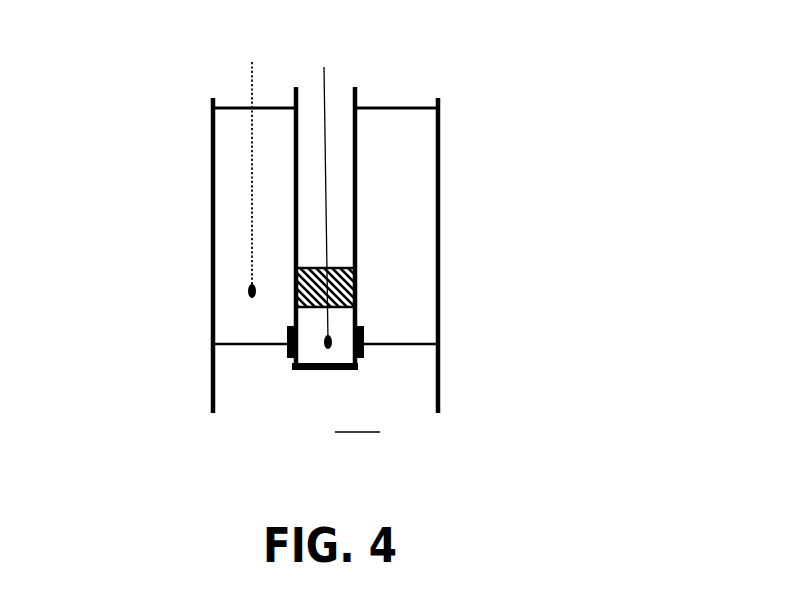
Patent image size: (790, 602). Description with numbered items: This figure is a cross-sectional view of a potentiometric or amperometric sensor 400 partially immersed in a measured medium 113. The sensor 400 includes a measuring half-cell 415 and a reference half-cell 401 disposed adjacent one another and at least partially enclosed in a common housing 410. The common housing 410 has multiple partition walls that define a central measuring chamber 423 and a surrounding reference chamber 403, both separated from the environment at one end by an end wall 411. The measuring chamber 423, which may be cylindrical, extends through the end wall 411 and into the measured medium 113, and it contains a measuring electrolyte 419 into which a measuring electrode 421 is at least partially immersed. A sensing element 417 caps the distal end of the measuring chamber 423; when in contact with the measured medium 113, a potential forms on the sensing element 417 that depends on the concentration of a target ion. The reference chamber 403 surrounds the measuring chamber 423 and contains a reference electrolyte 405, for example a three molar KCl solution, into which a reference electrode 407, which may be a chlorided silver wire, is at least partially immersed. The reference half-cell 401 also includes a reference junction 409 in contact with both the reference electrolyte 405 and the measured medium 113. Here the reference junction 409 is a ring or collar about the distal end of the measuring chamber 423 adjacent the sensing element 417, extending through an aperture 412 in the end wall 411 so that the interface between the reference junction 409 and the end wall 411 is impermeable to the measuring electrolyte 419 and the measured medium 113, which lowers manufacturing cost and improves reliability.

The sensor 400 is at (605, 111).
The reference half-cell 401 is at (206, 165).
The reference chamber 403 is at (413, 152).
The reference electrolyte 405 is at (232, 225).
The reference electrode 407 is at (252, 88).
The reference junction 409 is at (363, 338).
The common housing 410 is at (212, 280).
The end wall 411 is at (232, 345).
The aperture 412 is at (287, 345).
The measuring half-cell 415 is at (369, 94).
The sensing element 417 is at (357, 365).
The measuring electrolyte 419 is at (339, 321).
The measuring electrode 421 is at (324, 85).
The measuring chamber 423 is at (340, 225).
The measured medium 113 is at (359, 419).